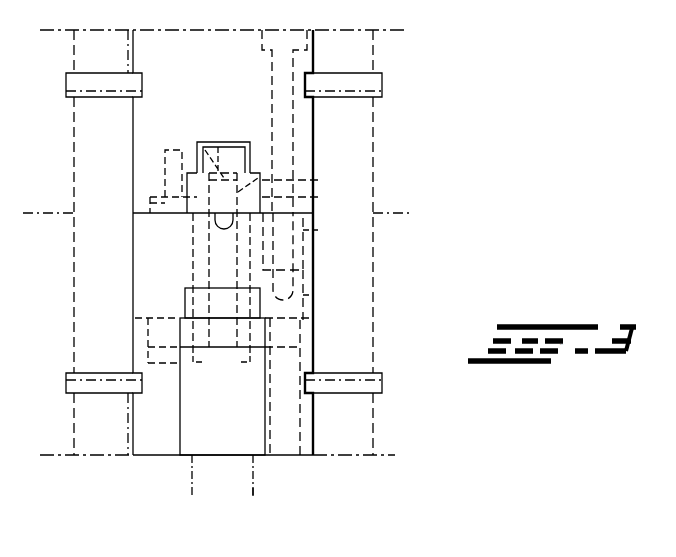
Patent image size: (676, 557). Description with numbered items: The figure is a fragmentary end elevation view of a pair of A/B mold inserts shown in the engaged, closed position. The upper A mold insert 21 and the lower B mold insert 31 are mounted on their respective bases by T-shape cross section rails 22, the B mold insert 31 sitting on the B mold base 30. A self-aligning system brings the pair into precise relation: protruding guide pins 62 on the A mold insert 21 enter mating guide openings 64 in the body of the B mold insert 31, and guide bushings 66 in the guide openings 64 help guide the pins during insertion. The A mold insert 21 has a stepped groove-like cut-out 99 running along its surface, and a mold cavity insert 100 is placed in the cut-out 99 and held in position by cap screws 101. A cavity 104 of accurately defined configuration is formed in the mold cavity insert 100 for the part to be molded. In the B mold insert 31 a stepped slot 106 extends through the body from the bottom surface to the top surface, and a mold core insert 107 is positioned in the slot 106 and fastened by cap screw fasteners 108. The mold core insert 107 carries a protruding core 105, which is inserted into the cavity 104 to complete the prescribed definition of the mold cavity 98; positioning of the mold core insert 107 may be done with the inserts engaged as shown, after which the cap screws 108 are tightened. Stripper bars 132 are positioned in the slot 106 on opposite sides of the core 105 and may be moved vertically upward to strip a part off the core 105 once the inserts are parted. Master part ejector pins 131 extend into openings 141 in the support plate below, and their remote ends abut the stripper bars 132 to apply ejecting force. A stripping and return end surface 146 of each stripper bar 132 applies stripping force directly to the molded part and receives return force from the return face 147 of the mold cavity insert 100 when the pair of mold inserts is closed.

The A mold insert 21 is at (226, 42).
The T-shape cross section rail 22 is at (360, 59).
The B mold base 30 is at (367, 471).
The B mold insert 31 is at (313, 353).
The guide pin 62 is at (272, 79).
The guide opening 64 is at (308, 280).
The guide bushing 66 is at (313, 232).
The mold cavity 98 is at (216, 140).
The stepped groove-like cut-out 99 is at (250, 142).
The mold cavity insert 100 is at (253, 182).
The cap screw 101 is at (168, 205).
The cavity 104 is at (197, 152).
The core 105 is at (220, 250).
The stepped slot 106 is at (185, 303).
The mold core insert 107 is at (258, 330).
The cap screw fastener 108 is at (170, 365).
The master part ejector pin 131 is at (253, 470).
The stripper bar 132 is at (248, 362).
The opening 141 is at (253, 490).
The stripping and return end surface 146 is at (314, 197).
The return face 147 is at (314, 180).